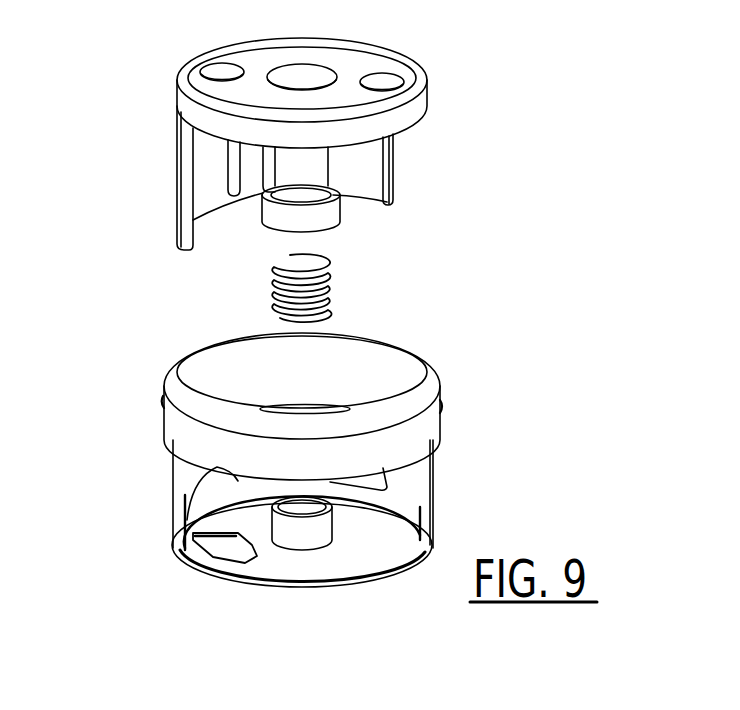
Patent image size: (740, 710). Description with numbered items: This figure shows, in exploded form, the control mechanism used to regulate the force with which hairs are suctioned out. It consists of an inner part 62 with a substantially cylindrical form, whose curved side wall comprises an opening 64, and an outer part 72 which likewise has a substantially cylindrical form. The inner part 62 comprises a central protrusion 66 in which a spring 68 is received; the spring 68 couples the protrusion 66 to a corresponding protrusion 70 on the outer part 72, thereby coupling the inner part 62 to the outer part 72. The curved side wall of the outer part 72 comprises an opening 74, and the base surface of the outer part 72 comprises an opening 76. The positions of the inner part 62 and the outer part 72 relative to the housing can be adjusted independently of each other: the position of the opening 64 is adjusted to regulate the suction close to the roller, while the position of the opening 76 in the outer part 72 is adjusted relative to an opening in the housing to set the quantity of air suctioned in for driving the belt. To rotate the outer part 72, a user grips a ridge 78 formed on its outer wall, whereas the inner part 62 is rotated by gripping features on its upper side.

The inner part 62 is at (478, 145).
The opening 64 is at (240, 173).
The central protrusion 66 is at (330, 215).
The spring 68 is at (323, 283).
The corresponding protrusion 70 is at (313, 535).
The outer part 72 is at (484, 472).
The opening 74 is at (240, 480).
The opening 76 is at (228, 552).
The ridge 78 is at (160, 399).